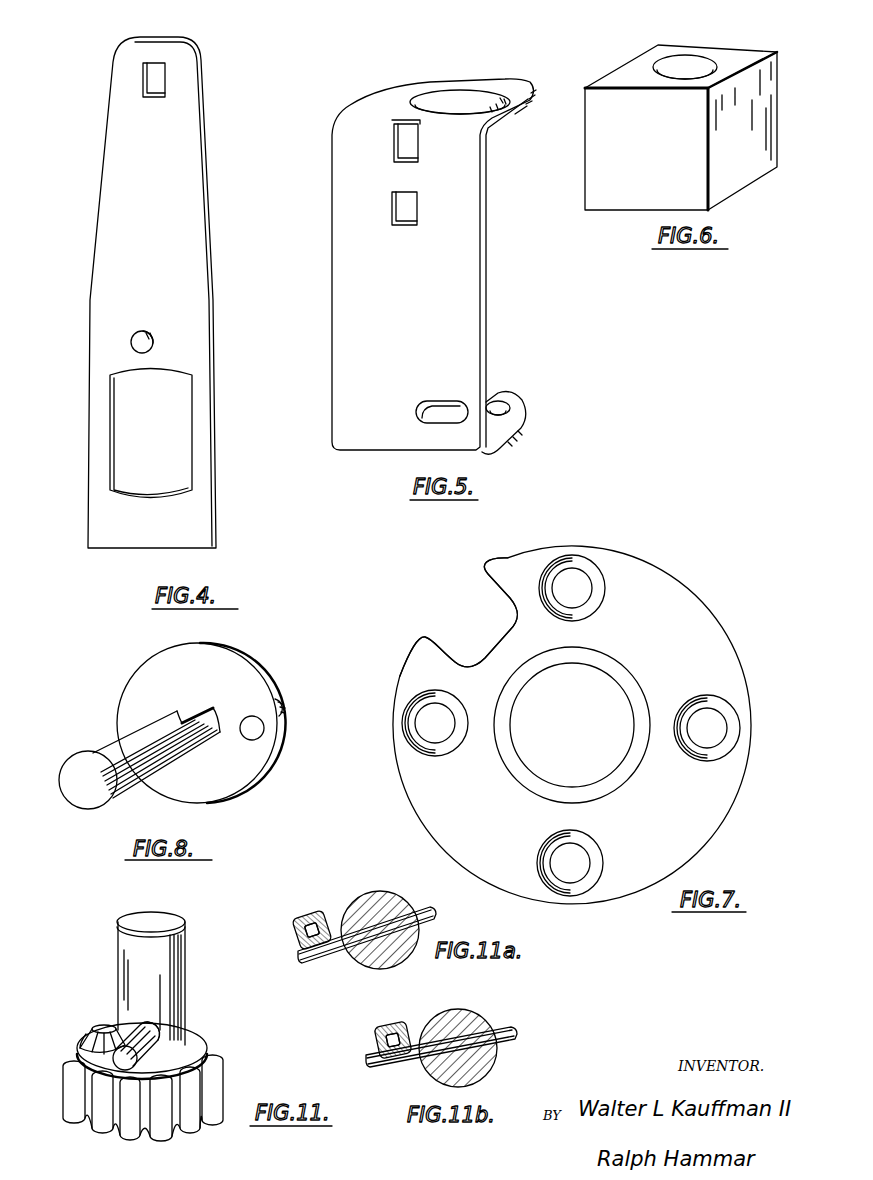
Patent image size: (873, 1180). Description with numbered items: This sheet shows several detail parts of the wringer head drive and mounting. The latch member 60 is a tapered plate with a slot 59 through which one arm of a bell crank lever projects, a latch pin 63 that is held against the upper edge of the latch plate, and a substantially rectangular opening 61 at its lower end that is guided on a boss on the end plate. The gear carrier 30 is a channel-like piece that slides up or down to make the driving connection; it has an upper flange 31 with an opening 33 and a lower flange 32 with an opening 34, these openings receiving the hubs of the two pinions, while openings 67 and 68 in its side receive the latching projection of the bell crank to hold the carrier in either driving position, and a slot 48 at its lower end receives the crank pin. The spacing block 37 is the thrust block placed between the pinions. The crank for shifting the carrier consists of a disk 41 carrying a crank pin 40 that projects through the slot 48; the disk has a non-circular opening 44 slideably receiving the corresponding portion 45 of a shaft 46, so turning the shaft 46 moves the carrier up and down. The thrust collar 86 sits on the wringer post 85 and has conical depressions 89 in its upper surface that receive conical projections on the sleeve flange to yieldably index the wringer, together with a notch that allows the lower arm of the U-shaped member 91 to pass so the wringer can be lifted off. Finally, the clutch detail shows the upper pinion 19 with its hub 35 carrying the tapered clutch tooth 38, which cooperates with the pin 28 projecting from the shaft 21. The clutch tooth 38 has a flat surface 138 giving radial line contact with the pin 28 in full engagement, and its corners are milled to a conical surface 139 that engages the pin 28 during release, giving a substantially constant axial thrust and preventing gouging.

In FIG. 11, the upper pinion 19 is at (222, 1075).
In FIG. 11, the shaft 21 is at (185, 985).
In FIG. 11A, the shaft 21 is at (378, 892).
In FIG. 11B, the shaft 21 is at (475, 1012).
In FIG. 11, the pin 28 is at (160, 1040).
In FIG. 11A, the pin 28 is at (312, 963).
In FIG. 11B, the pin 28 is at (405, 1066).
In FIG. 5, the carrier 30 is at (484, 315).
In FIG. 5, the upper flange 31 is at (512, 115).
In FIG. 5, the lower flange 32 is at (520, 428).
In FIG. 5, the opening 33 is at (497, 93).
In FIG. 5, the opening 34 is at (505, 403).
In FIG. 11, the hub 35 is at (190, 1062).
In FIG. 6, the spacing block 37 is at (622, 203).
In FIG. 11, the clutch tooth 38 is at (100, 1027).
In FIG. 8, the crank pin 40 is at (290, 702).
In FIG. 8, the disk 41 is at (243, 664).
In FIG. 8, the non-circular opening 44 is at (200, 707).
In FIG. 8, the non-circular portion of shaft 45 is at (185, 713).
In FIG. 8, the shaft 46 is at (115, 740).
In FIG. 5, the slot 48 is at (436, 402).
In FIG. 4, the slot 59 is at (143, 85).
In FIG. 4, the latch member 60 is at (214, 272).
In FIG. 4, the rectangular opening 61 is at (191, 433).
In FIG. 4, the latch pin 63 is at (137, 332).
In FIG. 5, the opening 67 is at (420, 147).
In FIG. 5, the opening 68 is at (418, 209).
In FIG. 7, the wringer post 85 is at (523, 762).
In FIG. 7, the thrust collar 86 is at (726, 637).
In FIG. 7, the conical depressions 89 is at (443, 742).
In FIG. 7, the U-shaped member 91 is at (500, 590).
In FIG. 11, the flat surface 138 is at (130, 1040).
In FIG. 11A, the flat surface 138 is at (316, 913).
In FIG. 11B, the flat surface 138 is at (415, 1016).
In FIG. 11, the conical surface 139 is at (90, 1036).
In FIG. 11A, the conical surface 139 is at (298, 922).
In FIG. 11B, the conical surface 139 is at (382, 1032).